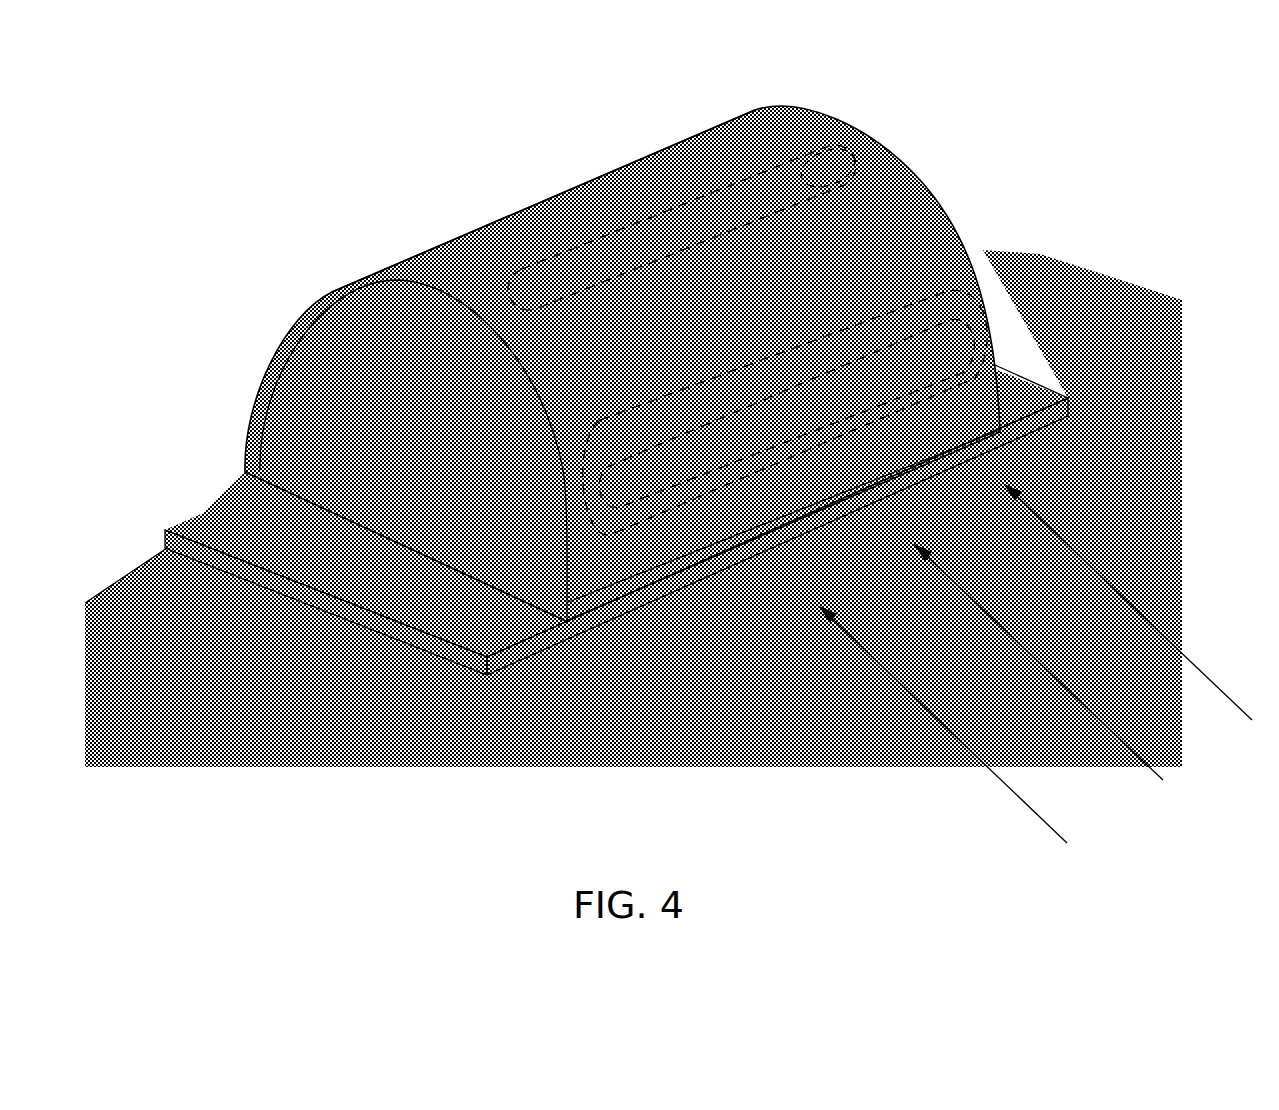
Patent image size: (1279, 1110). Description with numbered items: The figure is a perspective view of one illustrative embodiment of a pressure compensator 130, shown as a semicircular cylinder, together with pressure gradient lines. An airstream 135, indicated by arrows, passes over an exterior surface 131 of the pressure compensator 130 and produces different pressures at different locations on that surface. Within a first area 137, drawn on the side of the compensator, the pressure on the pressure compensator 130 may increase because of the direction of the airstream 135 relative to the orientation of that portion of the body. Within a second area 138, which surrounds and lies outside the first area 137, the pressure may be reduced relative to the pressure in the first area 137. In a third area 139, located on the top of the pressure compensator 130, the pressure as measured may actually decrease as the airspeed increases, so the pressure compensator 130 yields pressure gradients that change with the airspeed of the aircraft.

The pressure compensator 130 is at (655, 312).
The exterior surface 131 is at (612, 200).
The airstream 135 is at (1020, 800).
The first area 137 is at (947, 320).
The second area 138 is at (915, 303).
The third area 139 is at (797, 177).